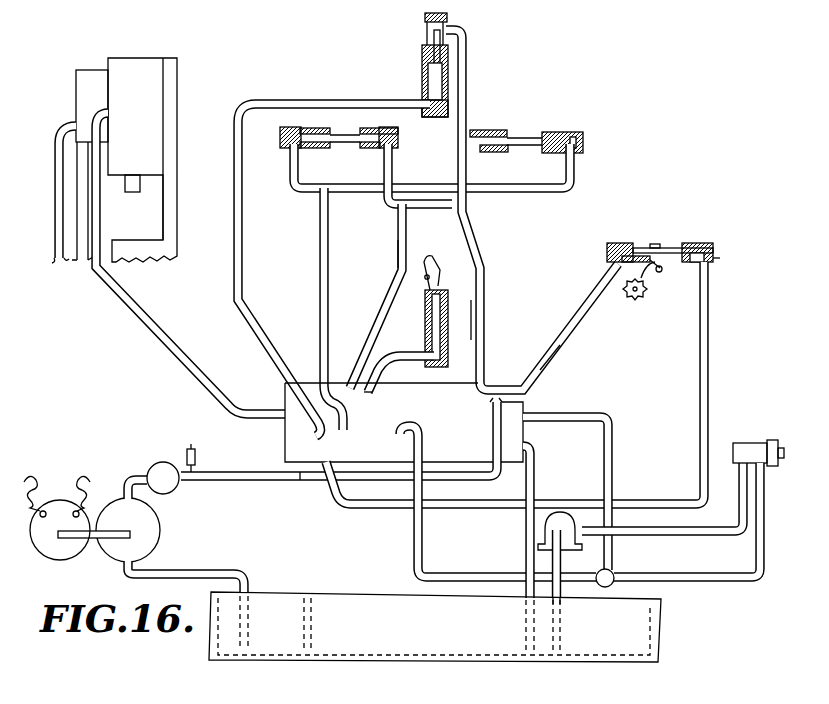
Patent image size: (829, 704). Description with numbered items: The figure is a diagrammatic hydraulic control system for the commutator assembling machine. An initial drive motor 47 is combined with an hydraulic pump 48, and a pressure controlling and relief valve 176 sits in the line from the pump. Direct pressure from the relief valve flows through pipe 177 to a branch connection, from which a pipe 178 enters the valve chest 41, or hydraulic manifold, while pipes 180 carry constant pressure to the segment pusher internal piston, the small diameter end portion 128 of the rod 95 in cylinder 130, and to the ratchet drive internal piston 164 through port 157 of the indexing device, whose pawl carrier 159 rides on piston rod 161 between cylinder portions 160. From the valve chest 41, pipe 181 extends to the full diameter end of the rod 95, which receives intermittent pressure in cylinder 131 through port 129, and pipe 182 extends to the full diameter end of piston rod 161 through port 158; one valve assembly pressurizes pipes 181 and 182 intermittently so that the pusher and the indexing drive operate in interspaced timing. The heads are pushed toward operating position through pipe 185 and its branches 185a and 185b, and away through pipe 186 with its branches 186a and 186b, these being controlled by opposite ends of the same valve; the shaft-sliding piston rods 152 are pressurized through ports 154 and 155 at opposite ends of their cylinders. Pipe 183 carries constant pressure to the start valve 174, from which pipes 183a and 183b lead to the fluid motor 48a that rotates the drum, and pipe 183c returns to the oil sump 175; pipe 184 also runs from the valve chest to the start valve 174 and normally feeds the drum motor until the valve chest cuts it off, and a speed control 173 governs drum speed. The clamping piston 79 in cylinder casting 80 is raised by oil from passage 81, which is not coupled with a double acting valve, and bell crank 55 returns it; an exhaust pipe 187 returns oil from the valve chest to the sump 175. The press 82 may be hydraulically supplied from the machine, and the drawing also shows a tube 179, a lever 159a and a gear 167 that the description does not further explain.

The valve chest 41 is at (302, 380).
The initial drive motor 47 is at (67, 565).
The hydraulic pump 48 is at (160, 538).
The fluid motor 48a is at (567, 514).
The bell crank 55 is at (434, 259).
The piston 79 is at (430, 330).
The cylinder casting 80 is at (448, 325).
The passage 81 is at (374, 386).
The press 82 is at (155, 158).
The rod 95 is at (425, 72).
The small diameter end portion 128 is at (432, 38).
The port 129 is at (425, 100).
The cylinder 130 is at (427, 17).
The cylinder 131 is at (458, 106).
The piston rod 152 is at (340, 134).
The port 154 is at (398, 141).
The port 155 is at (282, 142).
The port 157 is at (607, 253).
The port 158 is at (716, 259).
The pawl carrier 159 is at (655, 244).
The lever 159a is at (657, 274).
The cylinder portions 160 is at (606, 246).
The piston rod 161 is at (674, 250).
The piston 164 is at (627, 243).
The gear 167 is at (628, 294).
The speed control 173 is at (757, 443).
The start valve 174 is at (613, 578).
The oil sump 175 is at (663, 634).
The pressure controlling and relief valve 176 is at (192, 448).
The pipe 177 is at (263, 471).
The pipe 178 is at (489, 412).
The conduit 179 is at (486, 356).
The pipes 180 is at (551, 366).
The pipe 181 is at (252, 338).
The pipe 182 is at (372, 506).
The pipe 183 is at (614, 431).
The pipe 183a is at (705, 583).
The pipe 183b is at (690, 536).
The pipe 183c is at (560, 602).
The pipe 184 is at (424, 549).
The pipe 185 is at (322, 257).
The branch 185a is at (364, 195).
The branch 185b is at (303, 197).
The pipe 186 is at (390, 302).
The branch 186a is at (416, 206).
The branch 186b is at (392, 168).
The pipe 187 is at (525, 550).